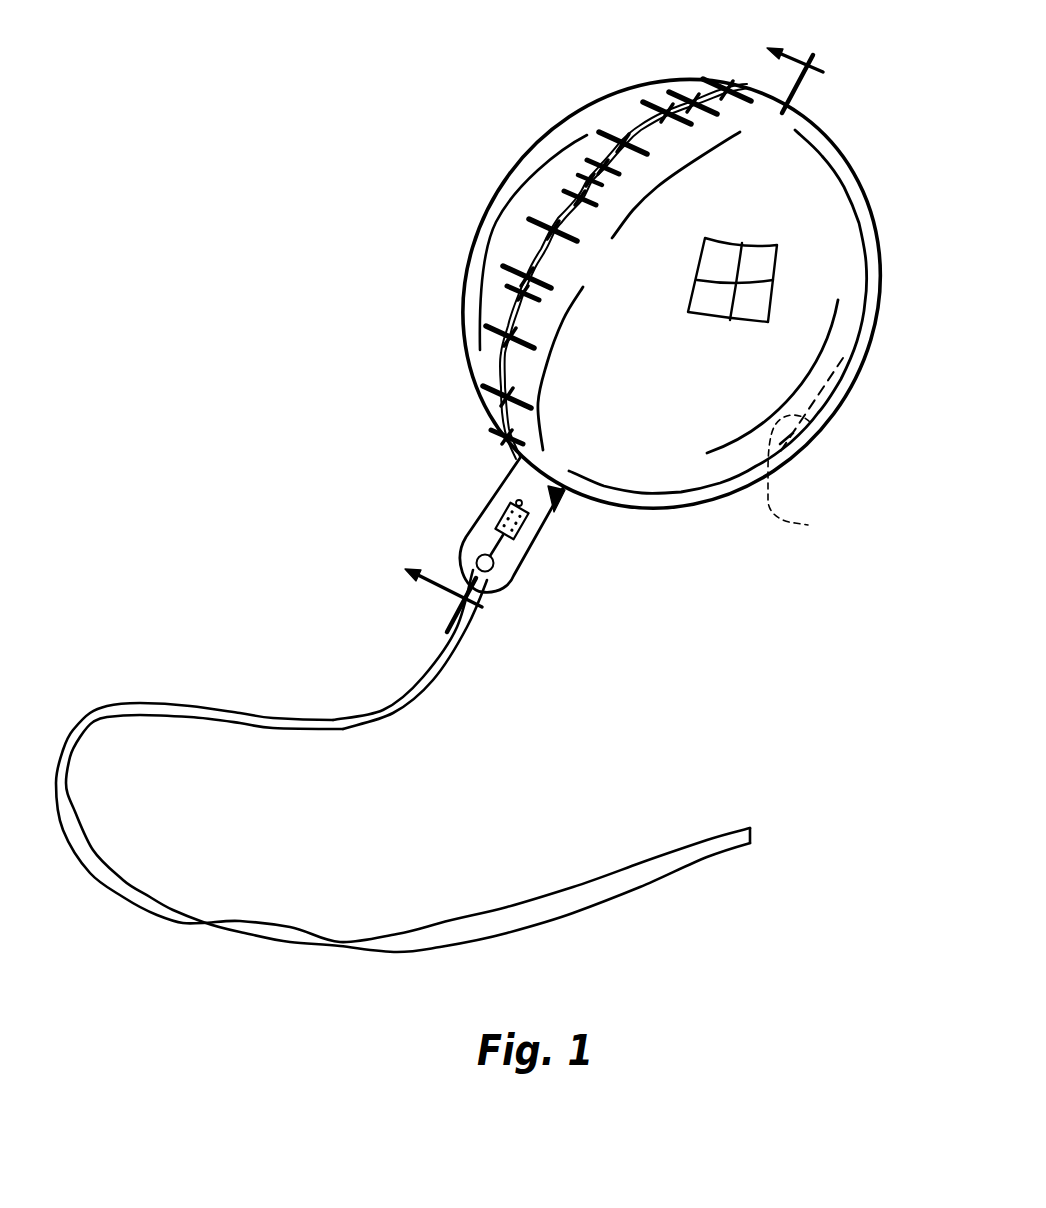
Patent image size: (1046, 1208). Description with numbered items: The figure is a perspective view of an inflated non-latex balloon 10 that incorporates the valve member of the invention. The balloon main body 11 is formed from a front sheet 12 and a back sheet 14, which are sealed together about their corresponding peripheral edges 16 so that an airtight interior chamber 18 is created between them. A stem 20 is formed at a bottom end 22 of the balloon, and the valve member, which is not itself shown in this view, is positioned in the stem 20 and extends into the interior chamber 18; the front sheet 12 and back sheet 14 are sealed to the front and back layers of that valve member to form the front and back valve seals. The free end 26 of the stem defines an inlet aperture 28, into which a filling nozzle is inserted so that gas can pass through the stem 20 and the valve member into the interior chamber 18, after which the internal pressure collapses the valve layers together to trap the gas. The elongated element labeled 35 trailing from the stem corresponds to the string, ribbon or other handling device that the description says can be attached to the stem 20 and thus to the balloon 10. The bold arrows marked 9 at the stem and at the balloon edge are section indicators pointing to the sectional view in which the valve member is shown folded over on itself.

The balloon 10 is at (545, 90).
The balloon main body 11 is at (690, 477).
The front sheet 12 is at (837, 130).
The back sheet 14 is at (687, 82).
The peripheral edges 16 is at (497, 355).
The interior chamber 18 is at (803, 481).
The stem 20 is at (473, 533).
The bottom end 22 is at (541, 490).
The free end 26 is at (487, 593).
The inlet aperture 28 is at (497, 570).
The wrist strap 35 is at (253, 708).
The section line 9 is at (602, 328).